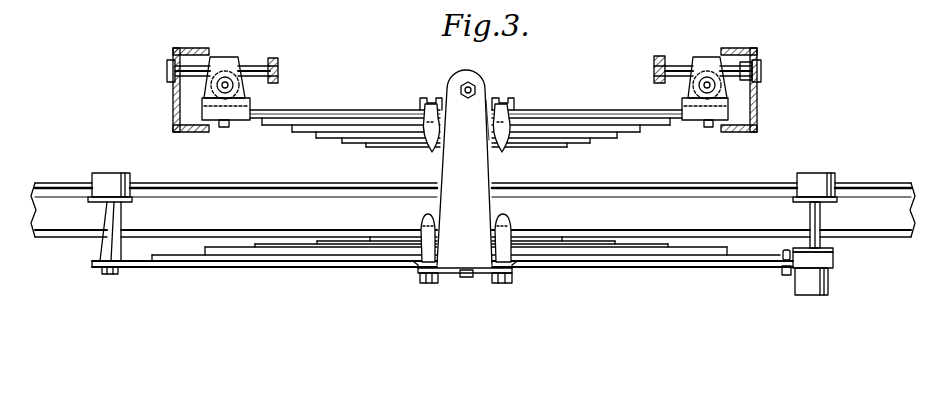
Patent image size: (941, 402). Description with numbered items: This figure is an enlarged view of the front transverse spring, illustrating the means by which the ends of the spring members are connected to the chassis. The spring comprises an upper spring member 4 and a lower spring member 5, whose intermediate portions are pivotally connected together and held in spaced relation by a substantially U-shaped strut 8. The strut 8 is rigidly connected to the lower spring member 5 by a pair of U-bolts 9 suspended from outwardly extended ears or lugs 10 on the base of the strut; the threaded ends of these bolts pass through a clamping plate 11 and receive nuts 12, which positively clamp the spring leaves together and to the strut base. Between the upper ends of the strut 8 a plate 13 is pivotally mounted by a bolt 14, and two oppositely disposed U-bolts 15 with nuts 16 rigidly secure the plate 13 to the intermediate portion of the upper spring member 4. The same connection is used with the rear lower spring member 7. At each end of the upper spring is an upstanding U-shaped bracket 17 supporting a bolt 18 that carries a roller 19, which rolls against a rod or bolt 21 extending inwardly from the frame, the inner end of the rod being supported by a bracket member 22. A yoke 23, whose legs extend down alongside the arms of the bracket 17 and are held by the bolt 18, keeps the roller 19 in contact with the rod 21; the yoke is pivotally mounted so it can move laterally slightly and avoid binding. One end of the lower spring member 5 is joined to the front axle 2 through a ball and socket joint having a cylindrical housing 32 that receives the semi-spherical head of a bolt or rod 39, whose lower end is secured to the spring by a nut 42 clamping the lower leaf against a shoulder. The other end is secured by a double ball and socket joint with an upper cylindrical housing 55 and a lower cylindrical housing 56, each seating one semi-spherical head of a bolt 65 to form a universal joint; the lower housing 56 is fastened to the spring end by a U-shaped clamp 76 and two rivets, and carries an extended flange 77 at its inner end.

The front axle 2 is at (656, 192).
The upper spring member 4 is at (573, 122).
The lower spring member 5 is at (621, 256).
The lower spring member 7 is at (172, 98).
The strut 8 is at (464, 167).
The U-bolts 9 is at (414, 262).
The ears or lugs 10 is at (423, 222).
The clamping plate 11 is at (450, 274).
The nuts 12 is at (420, 278).
The plate 13 is at (489, 102).
The bolt 14 is at (474, 86).
The U-bolts 15 is at (431, 146).
The nuts 16 is at (428, 98).
The U-shaped bracket 17 is at (233, 107).
The bolt 18 is at (724, 74).
The roller 19 is at (237, 86).
The rod or bolt 21 is at (250, 68).
The bracket member 22 is at (279, 62).
The yoke 23 is at (222, 62).
The cylindrical housing 32 is at (120, 184).
The bolt or rod 39 is at (112, 227).
The nut 42 is at (118, 273).
The upper cylindrical housing 55 is at (836, 178).
The lower cylindrical housing 56 is at (829, 284).
The bolt 65 is at (821, 222).
The U-shaped clamp 76 is at (785, 250).
The extended flange 77 is at (797, 271).